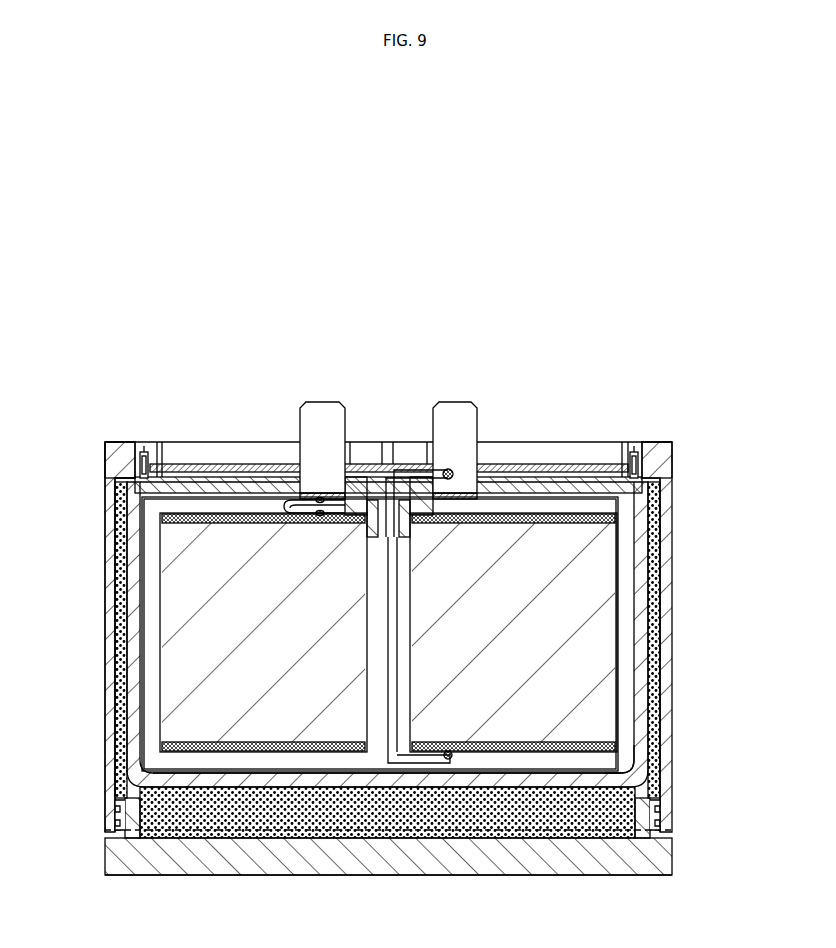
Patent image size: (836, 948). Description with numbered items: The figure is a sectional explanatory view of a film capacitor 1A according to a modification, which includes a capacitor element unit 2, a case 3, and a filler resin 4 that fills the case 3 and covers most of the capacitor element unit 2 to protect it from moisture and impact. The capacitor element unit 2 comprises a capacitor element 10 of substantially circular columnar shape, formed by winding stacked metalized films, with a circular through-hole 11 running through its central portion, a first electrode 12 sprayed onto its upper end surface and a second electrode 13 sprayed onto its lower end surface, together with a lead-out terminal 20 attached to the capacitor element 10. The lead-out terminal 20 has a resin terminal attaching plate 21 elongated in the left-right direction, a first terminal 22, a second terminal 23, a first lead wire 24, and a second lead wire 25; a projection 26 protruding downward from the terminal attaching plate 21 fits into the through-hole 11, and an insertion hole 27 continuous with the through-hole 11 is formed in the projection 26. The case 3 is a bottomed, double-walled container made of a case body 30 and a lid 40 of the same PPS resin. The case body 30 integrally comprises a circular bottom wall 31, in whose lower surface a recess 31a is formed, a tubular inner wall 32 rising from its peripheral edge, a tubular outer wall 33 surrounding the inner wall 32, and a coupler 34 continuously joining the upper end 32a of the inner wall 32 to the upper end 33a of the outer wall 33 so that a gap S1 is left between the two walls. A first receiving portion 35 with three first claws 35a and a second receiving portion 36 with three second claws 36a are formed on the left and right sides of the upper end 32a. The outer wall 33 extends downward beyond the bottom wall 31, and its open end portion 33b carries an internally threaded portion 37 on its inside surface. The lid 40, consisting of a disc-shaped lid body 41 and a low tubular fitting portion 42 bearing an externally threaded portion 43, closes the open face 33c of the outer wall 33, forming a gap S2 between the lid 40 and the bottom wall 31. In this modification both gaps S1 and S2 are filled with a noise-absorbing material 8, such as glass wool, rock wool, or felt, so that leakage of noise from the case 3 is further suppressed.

The film capacitor 1A is at (688, 442).
The capacitor element unit 2 is at (505, 510).
The case 3 is at (670, 560).
The filler resin 4 is at (503, 462).
The noise-absorbing material 8 is at (120, 737).
The capacitor element 10 is at (618, 693).
The through-hole 11 is at (380, 750).
The first electrode 12 is at (600, 517).
The second electrode 13 is at (622, 768).
The lead-out terminal 20 is at (282, 470).
The terminal attaching plate 21 is at (252, 477).
The first terminal 22 is at (345, 420).
The second terminal 23 is at (477, 420).
The first lead wire 24 is at (308, 513).
The second lead wire 25 is at (420, 757).
The projection 26 is at (447, 520).
The insertion hole 27 is at (367, 493).
The case body 30 is at (673, 625).
The bottom wall 31 is at (333, 788).
The recess 31a is at (287, 787).
The inner wall 32 is at (108, 550).
The upper end of inner wall 32a is at (130, 467).
The outer wall 33 is at (108, 603).
The upper end of outer wall 33a is at (110, 467).
The open end portion 33b is at (110, 812).
The open face 33c is at (483, 833).
The coupler 34 is at (124, 453).
The first receiving portion 35 is at (155, 452).
The first claws 35a is at (142, 452).
The second receiving portion 36 is at (622, 467).
The second claws 36a is at (636, 450).
The internally threaded portion 37 is at (122, 808).
The lid 40 is at (100, 855).
The lid body 41 is at (567, 875).
The fitting portion 42 is at (613, 823).
The externally threaded portion 43 is at (657, 830).
The gap S1 is at (120, 680).
The gap S2 is at (243, 827).